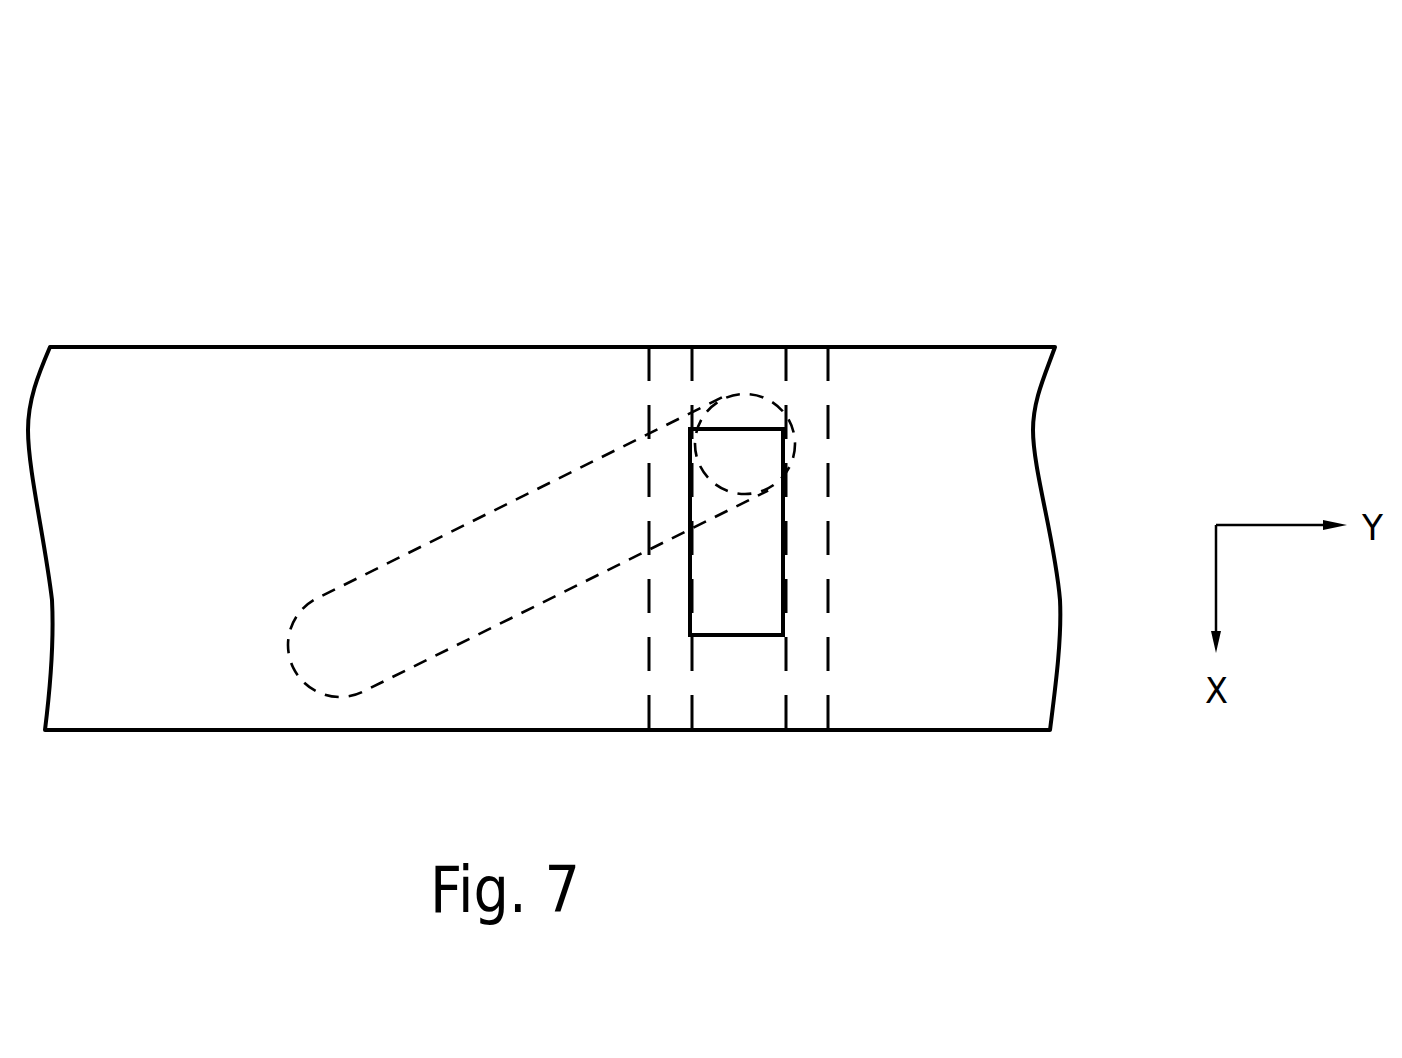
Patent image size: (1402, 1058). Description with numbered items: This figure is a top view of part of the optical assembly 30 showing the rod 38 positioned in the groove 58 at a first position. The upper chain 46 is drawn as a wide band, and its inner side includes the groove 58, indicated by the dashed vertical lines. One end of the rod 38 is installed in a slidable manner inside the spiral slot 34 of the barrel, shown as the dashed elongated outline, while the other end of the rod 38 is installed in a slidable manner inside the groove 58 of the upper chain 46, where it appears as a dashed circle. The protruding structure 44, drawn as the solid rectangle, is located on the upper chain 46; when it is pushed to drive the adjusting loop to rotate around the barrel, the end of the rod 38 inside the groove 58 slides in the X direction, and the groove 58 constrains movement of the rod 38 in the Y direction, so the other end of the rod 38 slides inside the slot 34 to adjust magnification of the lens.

The optical assembly 30 is at (1049, 111).
The spiral slot 34 is at (530, 515).
The rod 38 is at (748, 415).
The protruding structure 44 is at (770, 625).
The upper chain 46 is at (274, 398).
The groove 58 is at (718, 715).